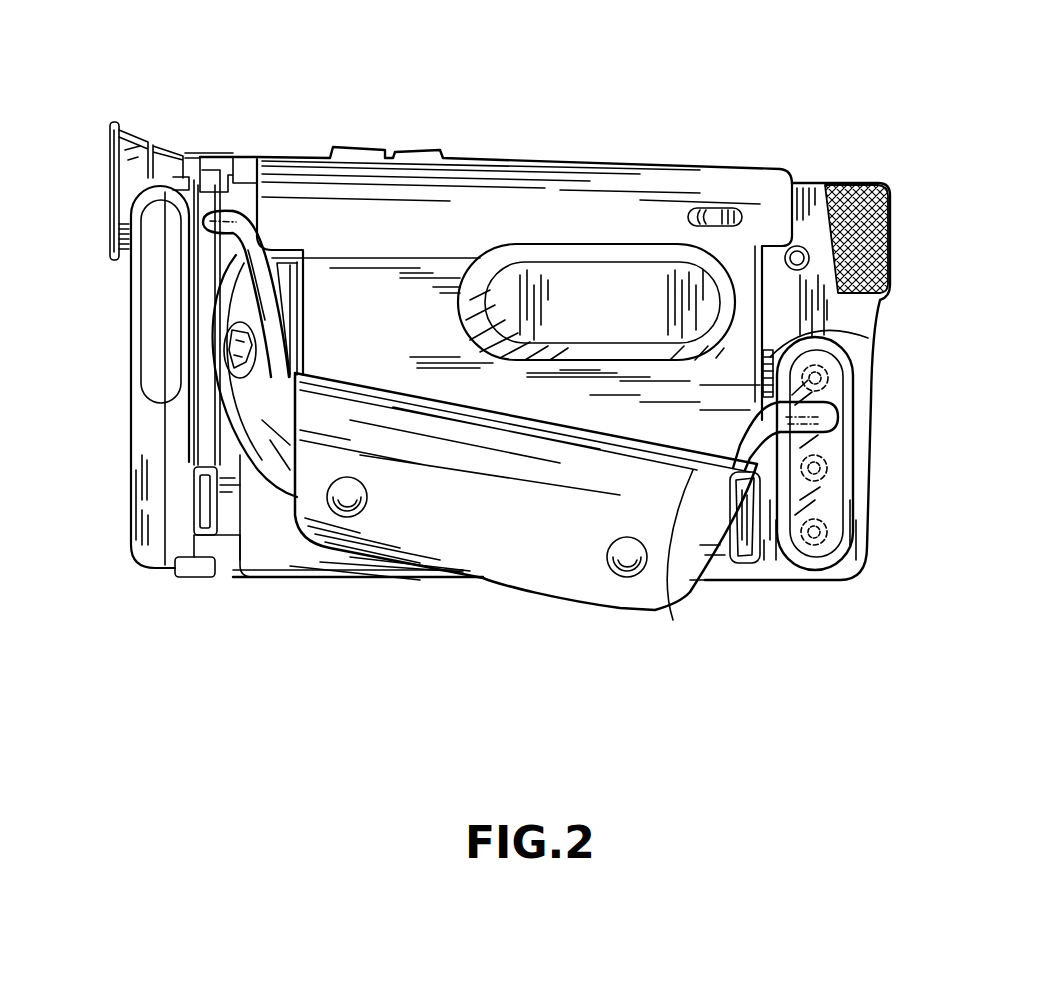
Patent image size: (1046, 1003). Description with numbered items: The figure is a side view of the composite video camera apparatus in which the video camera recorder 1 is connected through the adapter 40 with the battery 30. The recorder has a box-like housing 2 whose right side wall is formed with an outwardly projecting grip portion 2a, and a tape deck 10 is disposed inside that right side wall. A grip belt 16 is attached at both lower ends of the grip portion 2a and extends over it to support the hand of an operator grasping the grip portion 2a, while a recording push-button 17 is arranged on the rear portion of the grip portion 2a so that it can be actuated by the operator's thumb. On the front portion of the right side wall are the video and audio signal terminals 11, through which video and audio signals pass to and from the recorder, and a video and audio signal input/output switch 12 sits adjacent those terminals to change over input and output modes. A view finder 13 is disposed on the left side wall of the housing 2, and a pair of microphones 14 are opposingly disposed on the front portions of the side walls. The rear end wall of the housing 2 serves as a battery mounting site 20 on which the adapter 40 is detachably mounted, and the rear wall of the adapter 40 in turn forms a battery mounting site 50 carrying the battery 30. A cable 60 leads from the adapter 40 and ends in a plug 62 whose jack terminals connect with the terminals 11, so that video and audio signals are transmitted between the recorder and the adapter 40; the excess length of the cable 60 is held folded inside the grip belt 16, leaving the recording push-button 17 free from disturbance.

The video camera recorder 1 is at (540, 112).
The housing 2 is at (341, 586).
The grip portion 2a is at (673, 620).
The tape deck 10 is at (752, 255).
The video and audio signal terminals 11 is at (828, 378).
The video and audio signal input/output switch 12 is at (868, 338).
The view finder 13 is at (247, 160).
The microphones 14 is at (850, 185).
The grip belt 16 is at (537, 577).
The recording push-button 17 is at (255, 330).
The battery mounting site 20 is at (212, 447).
The battery 30 is at (147, 422).
The adapter 40 is at (200, 258).
The battery mounting site 50 is at (190, 336).
The cable 60 is at (268, 292).
The plug 62 is at (816, 560).